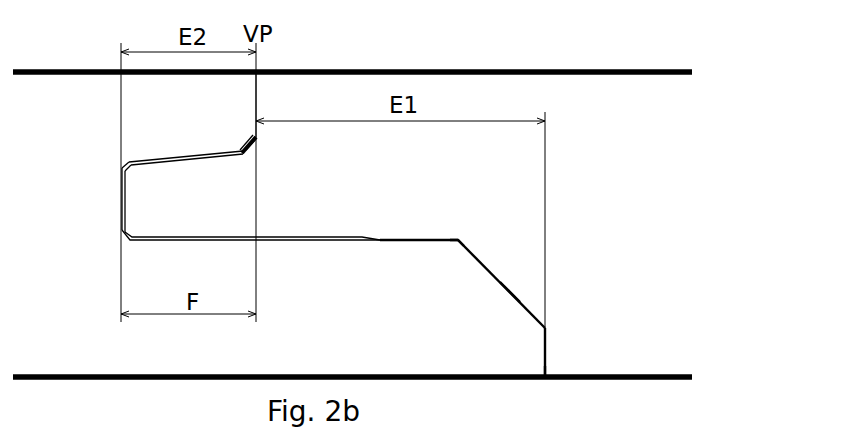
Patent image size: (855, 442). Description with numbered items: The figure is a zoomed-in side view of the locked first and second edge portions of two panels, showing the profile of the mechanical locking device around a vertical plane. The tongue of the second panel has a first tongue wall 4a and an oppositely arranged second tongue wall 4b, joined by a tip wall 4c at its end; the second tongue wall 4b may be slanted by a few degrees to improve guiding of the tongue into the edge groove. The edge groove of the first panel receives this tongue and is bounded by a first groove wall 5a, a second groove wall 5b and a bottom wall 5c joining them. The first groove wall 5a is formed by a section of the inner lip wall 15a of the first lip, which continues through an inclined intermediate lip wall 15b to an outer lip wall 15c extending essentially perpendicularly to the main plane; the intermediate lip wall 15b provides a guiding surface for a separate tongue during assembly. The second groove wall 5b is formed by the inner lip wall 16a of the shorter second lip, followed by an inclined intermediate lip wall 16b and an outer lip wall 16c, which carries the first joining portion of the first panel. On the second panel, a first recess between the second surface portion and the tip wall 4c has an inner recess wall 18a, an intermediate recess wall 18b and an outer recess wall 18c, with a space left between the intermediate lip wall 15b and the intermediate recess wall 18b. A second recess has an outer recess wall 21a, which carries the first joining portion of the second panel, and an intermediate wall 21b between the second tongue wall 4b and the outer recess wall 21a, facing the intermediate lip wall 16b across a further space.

The first tongue wall 4a is at (279, 243).
The second tongue wall 4b is at (160, 158).
The tip wall 4c is at (121, 203).
The first groove wall 5a is at (214, 236).
The second groove wall 5b is at (199, 162).
The bottom wall 5c is at (117, 185).
The inner lip wall 15a is at (392, 240).
The intermediate lip wall 15b is at (504, 287).
The outer lip wall 15c is at (547, 362).
The inner lip wall 16a is at (154, 163).
The intermediate lip wall 16b is at (257, 143).
The outer lip wall 16c is at (258, 95).
The inner recess wall 18a is at (440, 243).
The intermediate recess wall 18b is at (511, 297).
The outer recess wall 18c is at (543, 356).
The outer recess wall 21a is at (253, 98).
The intermediate wall 21b is at (245, 150).